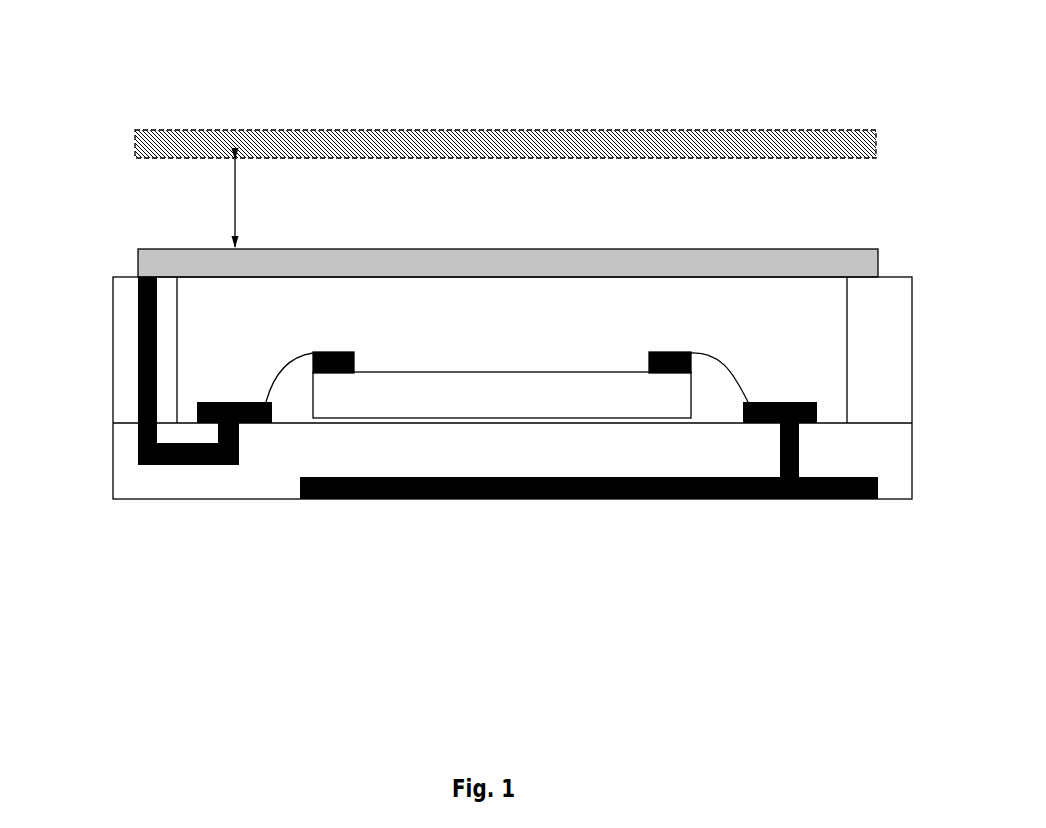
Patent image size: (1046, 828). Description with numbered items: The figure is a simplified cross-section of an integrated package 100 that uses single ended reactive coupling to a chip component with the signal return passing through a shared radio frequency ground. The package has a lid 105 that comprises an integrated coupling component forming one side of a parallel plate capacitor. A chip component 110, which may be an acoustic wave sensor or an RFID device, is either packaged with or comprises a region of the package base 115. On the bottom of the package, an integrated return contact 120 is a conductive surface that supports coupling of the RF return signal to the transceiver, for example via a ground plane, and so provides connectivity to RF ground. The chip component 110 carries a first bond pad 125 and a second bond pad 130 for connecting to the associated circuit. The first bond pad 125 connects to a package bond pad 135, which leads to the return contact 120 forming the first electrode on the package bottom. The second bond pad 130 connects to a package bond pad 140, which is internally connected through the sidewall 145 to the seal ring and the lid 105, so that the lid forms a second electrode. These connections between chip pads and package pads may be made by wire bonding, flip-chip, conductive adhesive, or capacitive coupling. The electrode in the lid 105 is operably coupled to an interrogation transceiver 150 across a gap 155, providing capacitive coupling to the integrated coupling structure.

The integrated package 100 is at (85, 24).
The lid 105 is at (761, 248).
The chip component 110 is at (502, 395).
The package base 115 is at (512, 444).
The integrated return contact 120 is at (529, 501).
The first bond pad 125 is at (652, 350).
The second bond pad 130 is at (348, 348).
The bond pad 135 is at (782, 400).
The bond pad 140 is at (225, 400).
The sidewall 145 is at (112, 300).
The transceiver 150 is at (574, 130).
The gap 155 is at (232, 208).